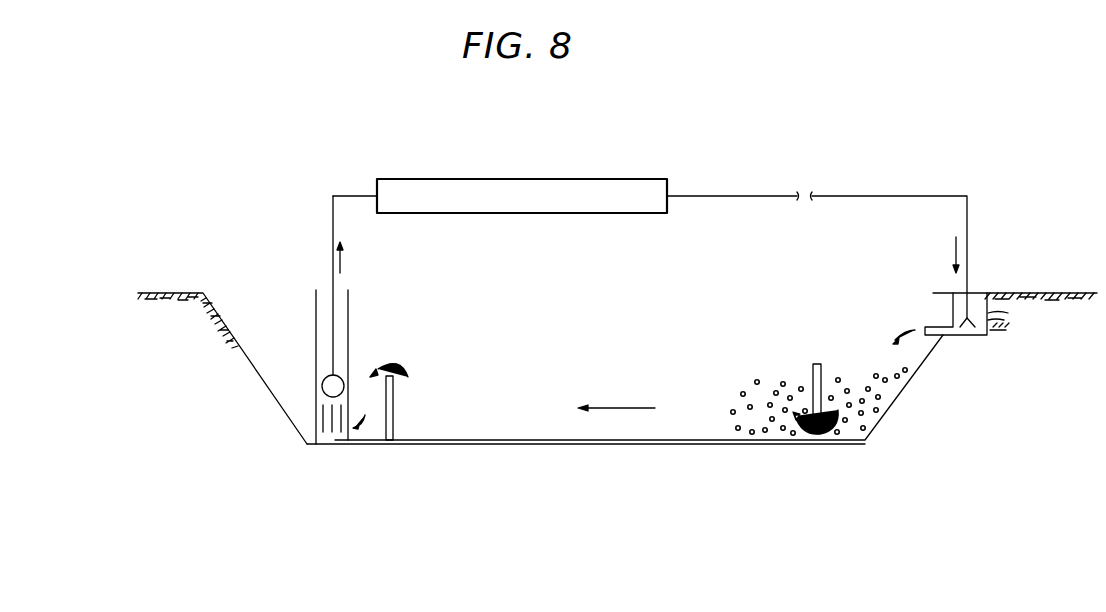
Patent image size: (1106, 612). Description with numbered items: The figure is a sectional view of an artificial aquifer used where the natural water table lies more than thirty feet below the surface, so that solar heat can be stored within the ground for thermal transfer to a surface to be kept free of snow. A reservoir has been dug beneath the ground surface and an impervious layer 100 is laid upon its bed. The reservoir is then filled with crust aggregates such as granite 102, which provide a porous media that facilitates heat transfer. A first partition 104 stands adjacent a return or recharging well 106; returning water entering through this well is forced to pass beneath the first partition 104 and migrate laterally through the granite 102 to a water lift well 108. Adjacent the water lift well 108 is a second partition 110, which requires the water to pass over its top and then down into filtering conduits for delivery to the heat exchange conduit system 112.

The impervious layer 100 is at (668, 444).
The granite 102 is at (887, 387).
The first partition 104 is at (812, 367).
The return or recharging well 106 is at (987, 293).
The water lift well 108 is at (348, 327).
The second partition 110 is at (397, 428).
The heat exchange conduit system 112 is at (526, 186).